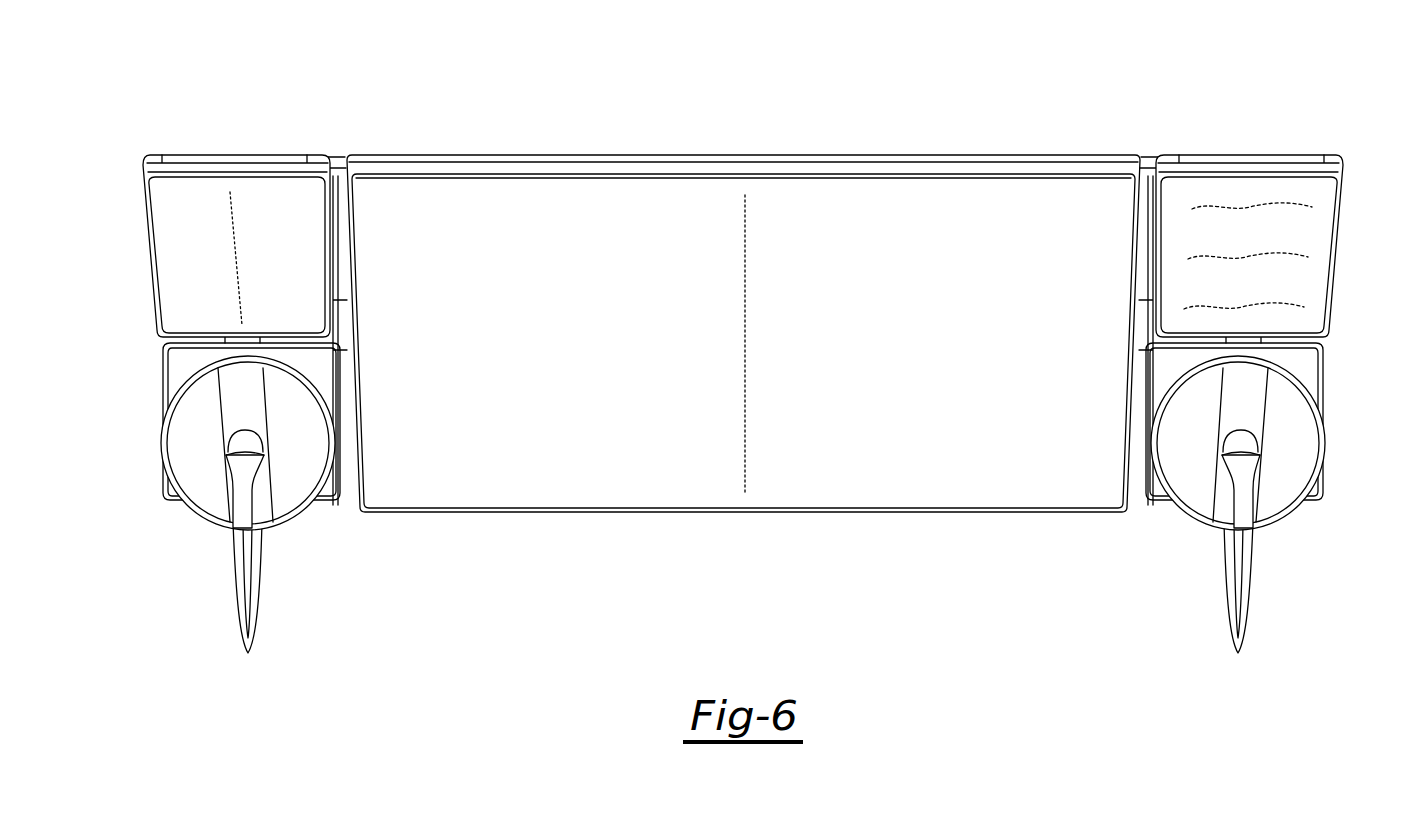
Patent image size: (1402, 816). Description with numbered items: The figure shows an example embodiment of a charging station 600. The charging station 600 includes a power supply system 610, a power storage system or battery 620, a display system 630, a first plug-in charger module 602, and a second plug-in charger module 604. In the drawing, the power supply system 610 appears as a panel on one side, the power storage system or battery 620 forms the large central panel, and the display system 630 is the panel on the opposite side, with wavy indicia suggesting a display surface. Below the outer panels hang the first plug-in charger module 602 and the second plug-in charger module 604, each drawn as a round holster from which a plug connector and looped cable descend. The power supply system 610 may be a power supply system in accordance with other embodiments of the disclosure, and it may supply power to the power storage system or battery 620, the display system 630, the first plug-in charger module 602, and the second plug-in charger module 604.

The charging station 600 is at (488, 92).
The first plug-in charger module 602 is at (187, 453).
The second plug-in charger module 604 is at (1298, 453).
The power supply system 610 is at (268, 216).
The power storage system or battery 620 is at (857, 218).
The display system 630 is at (1254, 196).